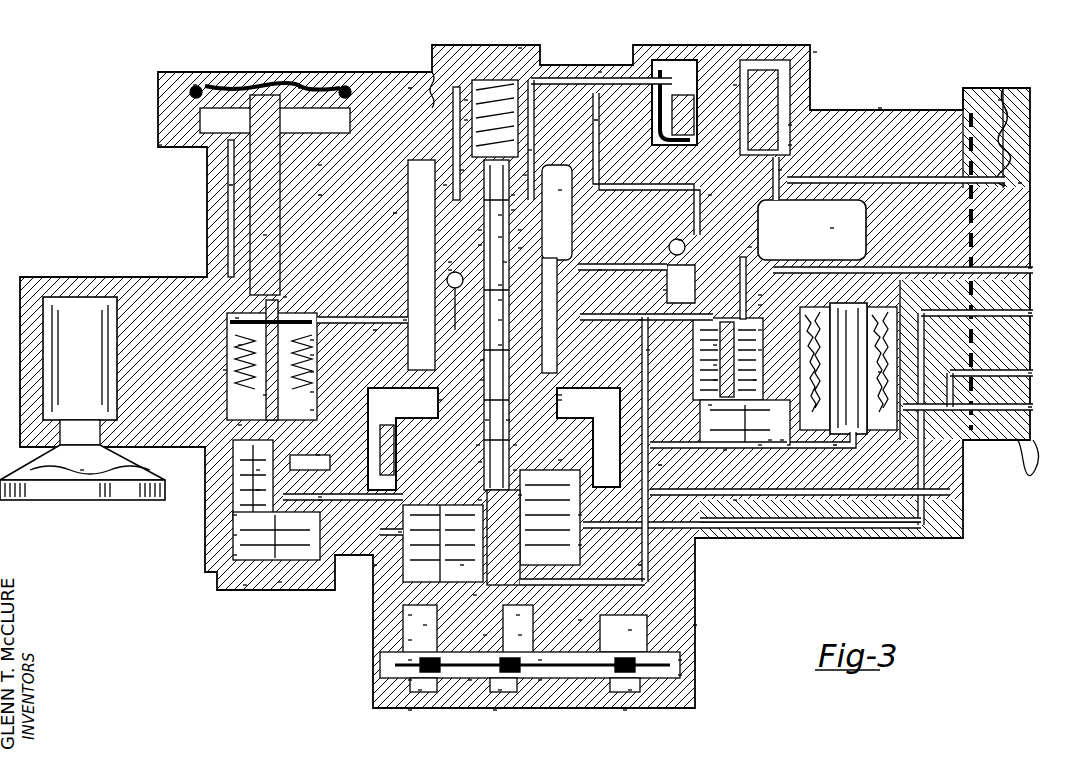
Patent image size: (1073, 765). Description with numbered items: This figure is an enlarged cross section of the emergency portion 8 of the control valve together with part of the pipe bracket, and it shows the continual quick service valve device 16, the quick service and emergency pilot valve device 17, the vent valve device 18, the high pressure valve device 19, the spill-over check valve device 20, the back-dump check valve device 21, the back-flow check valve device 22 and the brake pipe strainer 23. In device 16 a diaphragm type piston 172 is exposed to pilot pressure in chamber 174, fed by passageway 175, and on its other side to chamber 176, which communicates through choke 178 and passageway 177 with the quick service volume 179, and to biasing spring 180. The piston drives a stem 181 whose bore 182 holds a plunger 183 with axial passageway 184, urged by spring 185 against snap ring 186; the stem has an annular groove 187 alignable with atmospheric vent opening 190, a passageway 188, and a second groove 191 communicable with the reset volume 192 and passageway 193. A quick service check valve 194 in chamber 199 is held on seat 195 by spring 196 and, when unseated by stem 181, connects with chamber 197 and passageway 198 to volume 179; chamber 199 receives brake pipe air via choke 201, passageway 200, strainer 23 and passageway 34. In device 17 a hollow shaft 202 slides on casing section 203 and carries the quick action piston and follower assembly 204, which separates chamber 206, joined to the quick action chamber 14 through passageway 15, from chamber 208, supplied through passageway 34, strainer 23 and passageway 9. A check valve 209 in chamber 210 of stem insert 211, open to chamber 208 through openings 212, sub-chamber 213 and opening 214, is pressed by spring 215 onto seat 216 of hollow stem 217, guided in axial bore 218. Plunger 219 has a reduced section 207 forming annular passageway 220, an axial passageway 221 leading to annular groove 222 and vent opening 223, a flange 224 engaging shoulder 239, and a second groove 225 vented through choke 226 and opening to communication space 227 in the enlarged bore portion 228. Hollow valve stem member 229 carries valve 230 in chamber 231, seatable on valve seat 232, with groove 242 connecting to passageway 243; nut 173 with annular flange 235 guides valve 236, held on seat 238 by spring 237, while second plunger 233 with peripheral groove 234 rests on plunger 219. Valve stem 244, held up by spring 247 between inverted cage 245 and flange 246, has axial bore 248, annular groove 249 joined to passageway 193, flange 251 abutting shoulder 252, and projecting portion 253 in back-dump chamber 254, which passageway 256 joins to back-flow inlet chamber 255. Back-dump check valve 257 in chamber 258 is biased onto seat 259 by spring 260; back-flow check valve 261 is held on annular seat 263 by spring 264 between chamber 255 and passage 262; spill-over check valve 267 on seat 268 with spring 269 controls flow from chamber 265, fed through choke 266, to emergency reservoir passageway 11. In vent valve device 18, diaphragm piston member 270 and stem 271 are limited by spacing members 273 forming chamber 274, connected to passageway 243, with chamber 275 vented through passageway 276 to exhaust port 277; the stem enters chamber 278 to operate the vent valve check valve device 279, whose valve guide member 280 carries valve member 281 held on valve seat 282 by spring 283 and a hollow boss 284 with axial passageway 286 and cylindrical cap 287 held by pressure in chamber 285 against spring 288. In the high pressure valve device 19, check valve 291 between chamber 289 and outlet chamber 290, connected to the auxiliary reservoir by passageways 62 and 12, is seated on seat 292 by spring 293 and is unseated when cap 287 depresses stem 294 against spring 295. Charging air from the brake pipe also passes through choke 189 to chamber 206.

The emergency portion 8 is at (898, 90).
The brake pipe passageway 9 is at (375, 330).
The emergency reservoir passageway 11 is at (1030, 313).
The passageway 12 is at (1030, 373).
The quick action chamber 14 is at (1000, 100).
The passageway 15 is at (596, 120).
The continual quick service valve device 16 is at (823, 56).
The quick service and emergency pilot valve device 17 is at (528, 48).
The vent valve device 18 is at (277, 63).
The high pressure valve device 19 is at (260, 600).
The spill-over check valve device 20 is at (412, 720).
The back-dump check valve device 21 is at (497, 720).
The back-flow check valve device 22 is at (630, 720).
The brake pipe strainer 23 is at (870, 367).
The passageway 34 is at (1030, 268).
The passageway 62 is at (320, 497).
The diaphragm type piston 172 is at (735, 85).
The nut 173 is at (525, 175).
The chamber 174 is at (672, 60).
The passageway 175 is at (600, 72).
The chamber 176 is at (662, 145).
The passageway 177 is at (780, 170).
The choke 178 is at (790, 145).
The quick service volume 179 is at (818, 223).
The biasing spring 180 is at (790, 125).
The stem 181 is at (710, 195).
The bore 182 is at (760, 295).
The plunger 183 is at (715, 345).
The axial passageway 184 is at (715, 365).
The biasing spring 185 is at (760, 330).
The snap ring 186 is at (715, 380).
The annular groove 187 is at (750, 247).
The axial and transversely extending passageway 188 is at (665, 290).
The choke 189 is at (760, 445).
The atmospheric vent opening 190 is at (680, 240).
The second groove 191 is at (760, 305).
The reset volume 192 is at (600, 270).
The passageway 193 is at (640, 320).
The quick service check valve 194 is at (725, 450).
The seat 195 is at (710, 405).
The spring 196 is at (735, 500).
The chamber 197 is at (755, 380).
The passageway 198 is at (760, 350).
The chamber 199 is at (782, 440).
The passageway 200 is at (835, 445).
The choke 201 is at (770, 440).
The hollow shaft 202 is at (520, 230).
The casing section 203 is at (520, 248).
The quick action piston and follower assembly 204 is at (320, 500).
The chamber 206 is at (318, 455).
The reduced section portion 207 is at (508, 420).
The chamber 208 is at (648, 350).
The check valve 209 is at (560, 460).
The chamber 210 is at (515, 470).
The stem insert 211 is at (515, 445).
The openings 212 is at (478, 445).
The sub-chamber 213 is at (440, 400).
The opening 214 is at (560, 400).
The biasing spring 215 is at (520, 495).
The seat 216 is at (480, 462).
The hollow stem 217 is at (487, 420).
The axial bore 218 is at (482, 380).
The plunger 219 is at (500, 345).
The annular passageway 220 is at (560, 395).
The axial passageway 221 is at (482, 360).
The annular groove 222 is at (500, 320).
The vent opening 223 is at (450, 270).
The flange 224 is at (505, 262).
The second groove 225 is at (500, 300).
The choke 226 is at (405, 320).
The communication space 227 is at (450, 262).
The enlarged portion 228 is at (480, 245).
The hollow valve stem member 229 is at (500, 237).
The valve 230 is at (560, 190).
The chamber 231 is at (466, 120).
The valve seat 232 is at (513, 195).
The second plunger 233 is at (500, 215).
The peripheral groove 234 is at (480, 230).
The annular flange 235 is at (530, 150).
The valve 236 is at (462, 170).
The spring 237 is at (466, 100).
The seat 238 is at (445, 185).
The shoulder 239 is at (500, 285).
The groove 242 is at (513, 210).
The passageway 243 is at (410, 88).
The valve stem 244 is at (462, 565).
The inverted cage 245 is at (580, 515).
The flange 246 is at (400, 532).
The spring 247 is at (580, 545).
The axial bore 248 is at (480, 500).
The annular groove 249 is at (475, 595).
The flange 251 is at (518, 615).
The shoulder 252 is at (425, 625).
The downwardly projecting portion 253 is at (485, 635).
The back-dump chamber 254 is at (520, 635).
The back-flow inlet chamber 255 is at (630, 630).
The passageway 256 is at (580, 620).
The back-dump check valve 257 is at (540, 680).
The chamber 258 is at (470, 680).
The seat 259 is at (540, 660).
The spring 260 is at (500, 690).
The back-flow check valve 261 is at (680, 675).
The passage 262 is at (320, 165).
The annular seat 263 is at (680, 660).
The spring 264 is at (630, 690).
The chamber 265 is at (410, 640).
The choke 266 is at (410, 615).
The spill-over check valve 267 is at (410, 680).
The seat 268 is at (410, 660).
The biasing spring 269 is at (420, 690).
The diaphragm type piston member 270 is at (262, 85).
The stem 271 is at (265, 235).
The spacing members 273 is at (300, 88).
The chamber 274 is at (195, 85).
The chamber 275 is at (160, 145).
The passageway 276 is at (231, 185).
The exhaust port 277 is at (82, 470).
The chamber 278 is at (285, 297).
The vent valve check valve device 279 is at (217, 375).
The valve guide member 280 is at (312, 355).
The valve member 281 is at (312, 340).
The valve seat 282 is at (237, 318).
The spring 283 is at (312, 392).
The coaxial hollow boss 284 is at (312, 372).
The chamber 285 is at (240, 425).
The axial passageway 286 is at (240, 345).
The cylindrical cap 287 is at (312, 410).
The biasing spring 288 is at (265, 395).
The chamber 289 is at (245, 585).
The outlet chamber 290 is at (235, 515).
The check valve 291 is at (235, 555).
The seat 292 is at (235, 535).
The biasing spring 293 is at (280, 582).
The stem 294 is at (258, 470).
The spring 295 is at (258, 490).